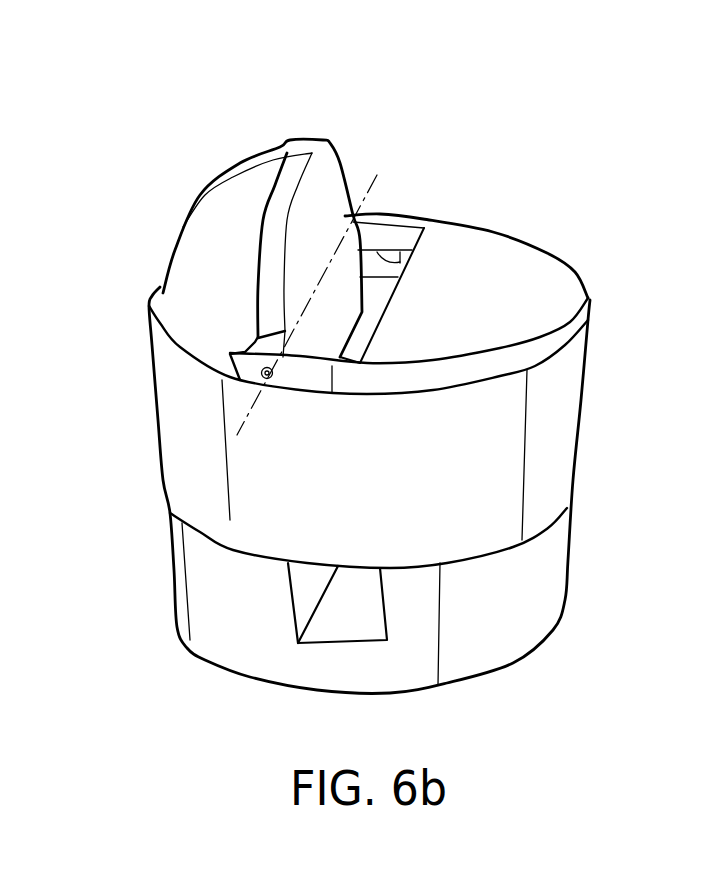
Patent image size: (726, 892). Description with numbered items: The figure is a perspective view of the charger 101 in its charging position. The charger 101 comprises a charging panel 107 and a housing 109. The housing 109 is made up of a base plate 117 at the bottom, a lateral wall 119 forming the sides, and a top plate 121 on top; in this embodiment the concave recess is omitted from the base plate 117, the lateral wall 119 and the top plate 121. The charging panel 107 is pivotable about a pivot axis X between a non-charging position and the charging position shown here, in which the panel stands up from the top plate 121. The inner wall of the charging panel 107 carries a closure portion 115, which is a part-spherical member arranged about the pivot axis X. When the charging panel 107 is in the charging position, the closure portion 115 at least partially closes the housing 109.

The charger 101 is at (240, 127).
The charging panel 107 is at (318, 227).
The housing 109 is at (505, 425).
The closure portion 115 is at (217, 278).
The base plate 117 is at (503, 612).
The lateral wall 119 is at (527, 497).
The top plate 121 is at (473, 292).